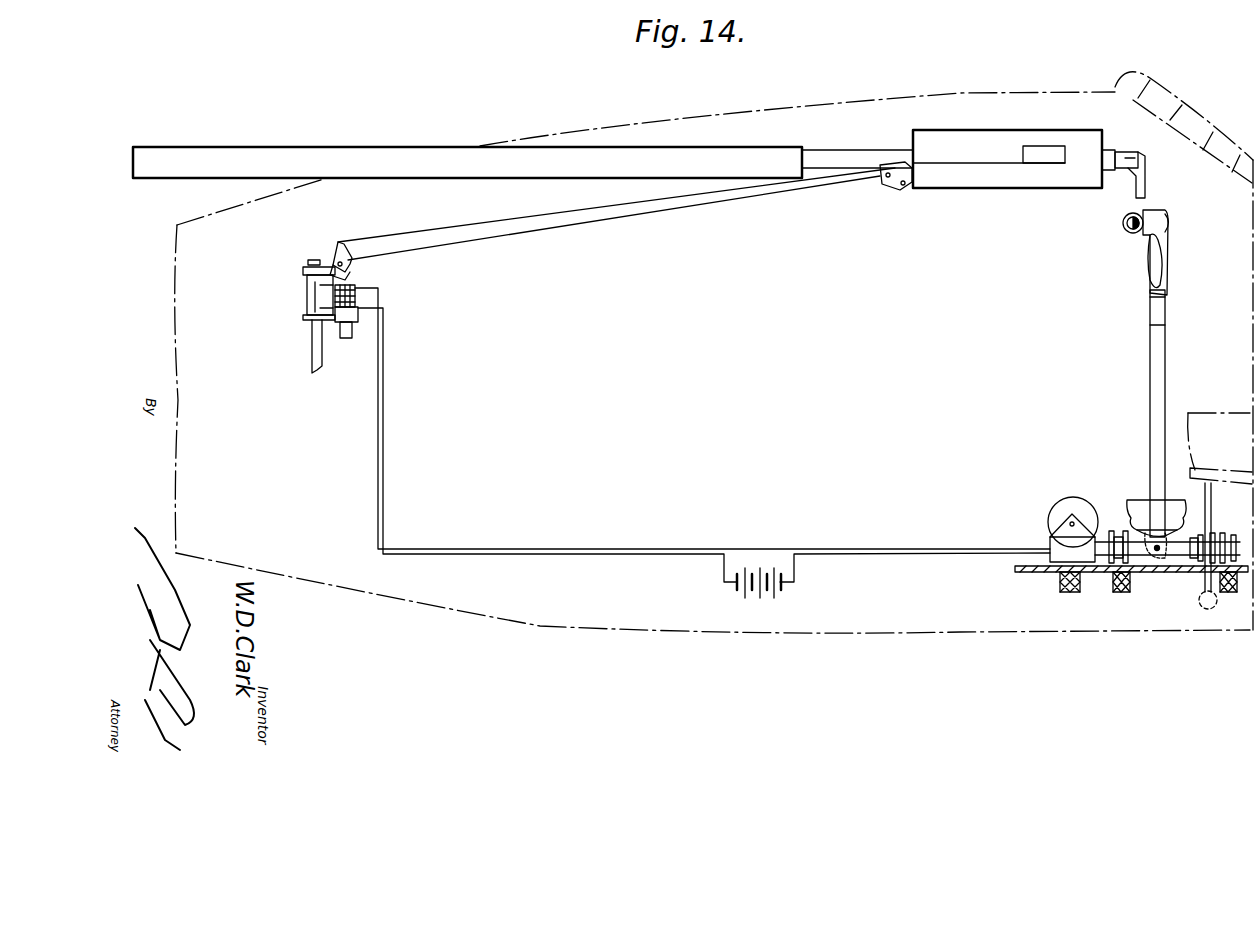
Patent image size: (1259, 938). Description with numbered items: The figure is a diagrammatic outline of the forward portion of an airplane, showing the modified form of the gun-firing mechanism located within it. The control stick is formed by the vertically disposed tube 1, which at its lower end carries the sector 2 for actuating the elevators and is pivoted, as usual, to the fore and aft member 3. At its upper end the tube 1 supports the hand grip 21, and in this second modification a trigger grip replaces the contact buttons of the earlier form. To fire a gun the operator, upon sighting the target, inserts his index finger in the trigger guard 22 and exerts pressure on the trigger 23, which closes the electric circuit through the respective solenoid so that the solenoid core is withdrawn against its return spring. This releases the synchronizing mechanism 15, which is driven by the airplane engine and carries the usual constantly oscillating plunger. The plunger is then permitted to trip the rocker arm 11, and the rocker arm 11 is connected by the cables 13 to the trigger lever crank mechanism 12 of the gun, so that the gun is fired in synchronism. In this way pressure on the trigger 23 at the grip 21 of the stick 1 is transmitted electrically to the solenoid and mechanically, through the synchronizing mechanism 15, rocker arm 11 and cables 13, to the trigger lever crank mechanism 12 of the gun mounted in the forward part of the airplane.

The vertically disposed tube 1 is at (1167, 367).
The sector 2 is at (1176, 500).
The fore and aft member 3 is at (1182, 553).
The rocker arm 11 is at (338, 254).
The trigger lever crank mechanism 12 is at (1018, 183).
The cables 13 is at (527, 200).
The synchronizing mechanism 15 is at (315, 297).
The hand grip 21 is at (1155, 262).
The trigger guard 22 is at (1130, 232).
The trigger 23 is at (1124, 224).